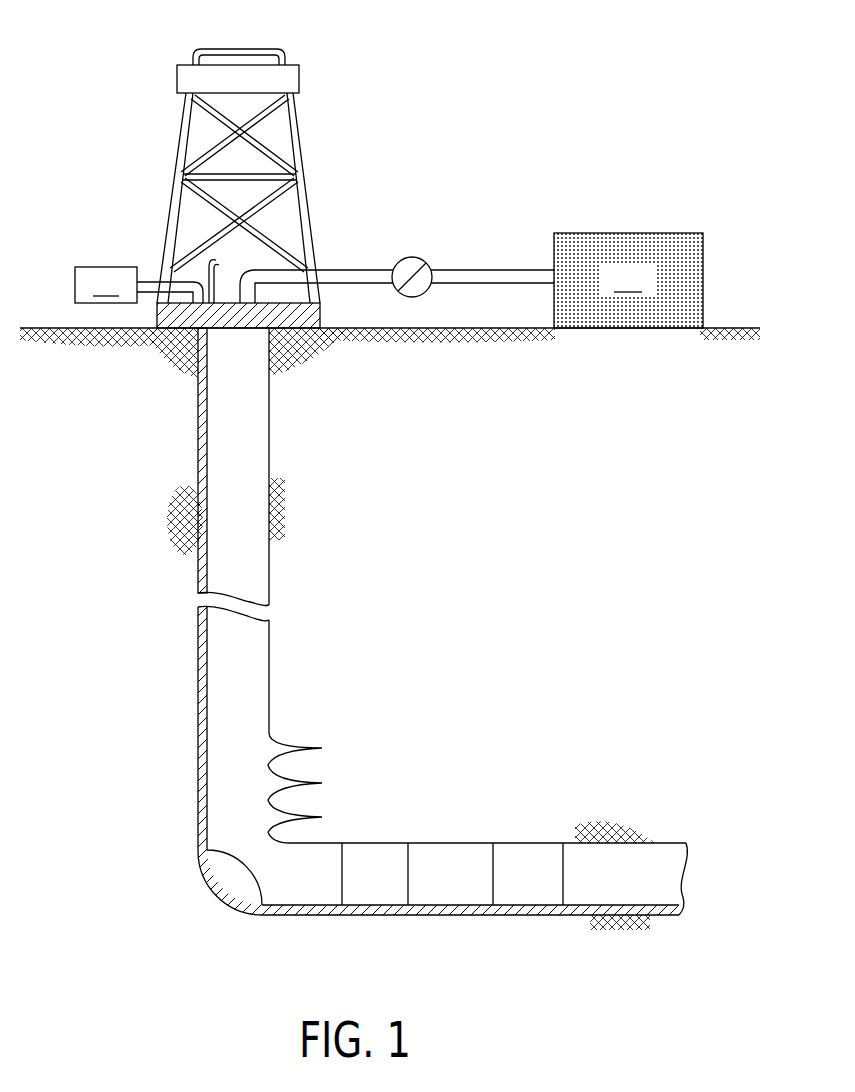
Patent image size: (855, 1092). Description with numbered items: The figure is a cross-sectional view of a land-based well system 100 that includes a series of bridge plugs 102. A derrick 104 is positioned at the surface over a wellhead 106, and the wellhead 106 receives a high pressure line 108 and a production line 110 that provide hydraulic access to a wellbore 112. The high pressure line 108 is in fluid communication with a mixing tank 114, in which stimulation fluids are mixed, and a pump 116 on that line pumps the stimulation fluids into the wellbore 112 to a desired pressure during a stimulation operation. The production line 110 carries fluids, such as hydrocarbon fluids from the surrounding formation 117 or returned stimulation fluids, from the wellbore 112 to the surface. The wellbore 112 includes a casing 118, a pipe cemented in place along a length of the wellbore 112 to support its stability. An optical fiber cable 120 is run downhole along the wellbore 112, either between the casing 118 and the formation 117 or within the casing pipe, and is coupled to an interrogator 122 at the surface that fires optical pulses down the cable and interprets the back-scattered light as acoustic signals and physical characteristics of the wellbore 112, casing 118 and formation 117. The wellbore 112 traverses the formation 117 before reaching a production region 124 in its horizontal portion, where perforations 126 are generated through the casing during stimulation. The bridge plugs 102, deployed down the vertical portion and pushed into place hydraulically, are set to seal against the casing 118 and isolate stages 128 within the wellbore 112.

The well system 100 is at (115, 90).
The bridge plugs 102 is at (383, 898).
The derrick 104 is at (288, 80).
The wellhead 106 is at (313, 322).
The high pressure line 108 is at (340, 270).
The production line 110 is at (217, 270).
The wellbore 112 is at (250, 462).
The mixing tank 114 is at (628, 280).
The pump 116 is at (408, 258).
The formation 117 is at (120, 477).
The casing 118 is at (198, 660).
The optical fiber cable 120 is at (198, 776).
The interrogator 122 is at (139, 285).
The production region 124 is at (465, 749).
The perforations 126 is at (300, 778).
The stages 128 is at (297, 897).